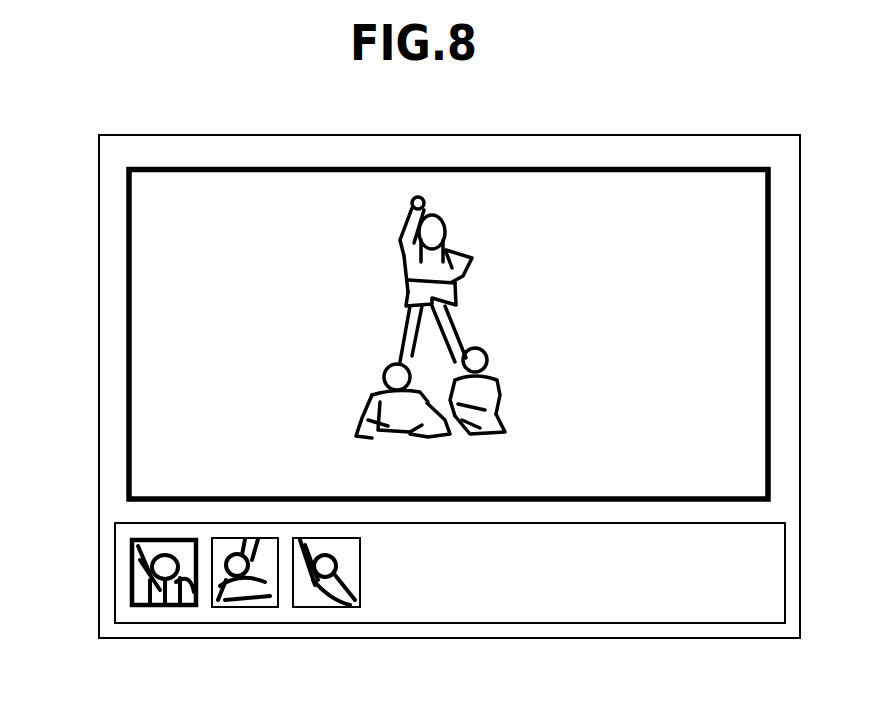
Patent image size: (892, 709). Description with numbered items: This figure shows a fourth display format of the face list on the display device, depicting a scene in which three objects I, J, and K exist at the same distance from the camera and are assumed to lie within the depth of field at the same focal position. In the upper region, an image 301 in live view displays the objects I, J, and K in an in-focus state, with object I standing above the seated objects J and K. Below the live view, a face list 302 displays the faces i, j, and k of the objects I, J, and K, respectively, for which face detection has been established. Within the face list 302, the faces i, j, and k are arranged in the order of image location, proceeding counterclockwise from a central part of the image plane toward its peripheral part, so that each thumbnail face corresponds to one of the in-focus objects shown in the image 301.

The image in live view 301 is at (128, 335).
The face list 302 is at (115, 577).
The object I is at (467, 250).
The object J is at (385, 365).
The object K is at (490, 352).
The face i is at (162, 607).
The face j is at (243, 607).
The face k is at (330, 607).